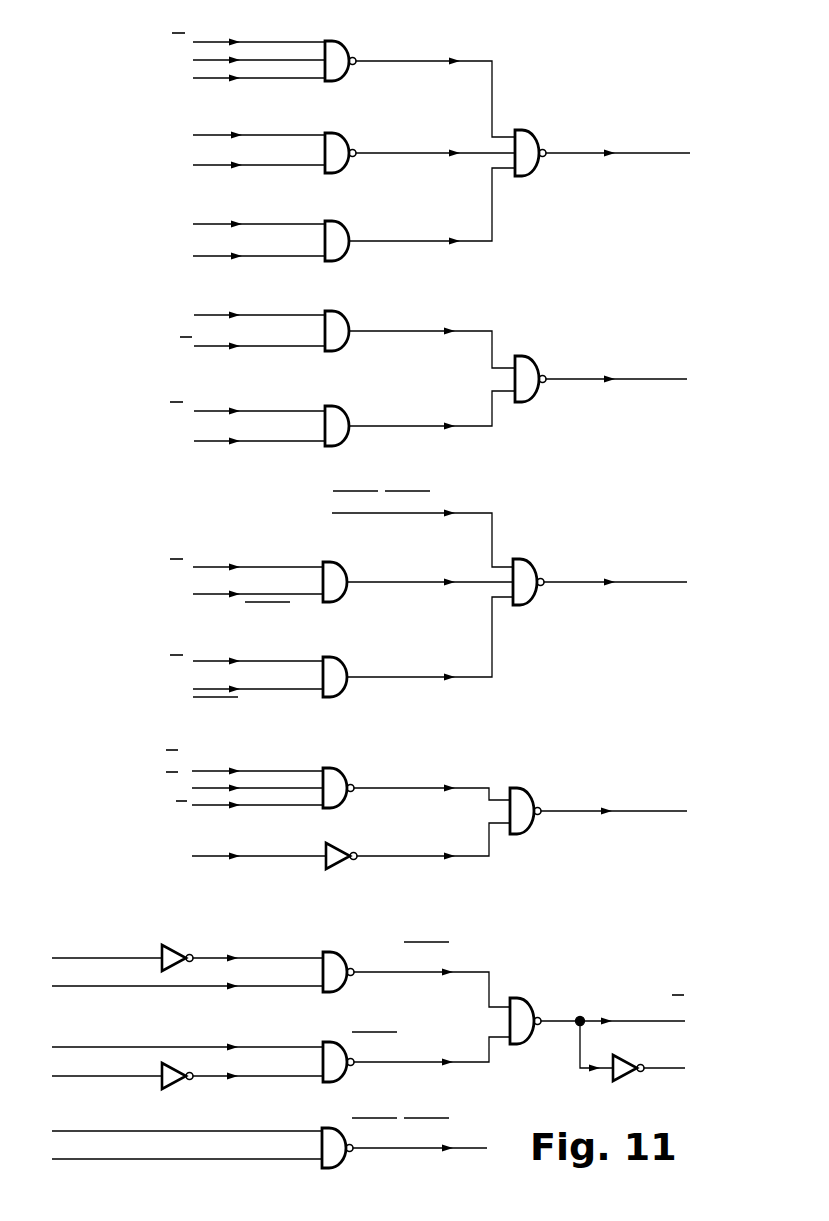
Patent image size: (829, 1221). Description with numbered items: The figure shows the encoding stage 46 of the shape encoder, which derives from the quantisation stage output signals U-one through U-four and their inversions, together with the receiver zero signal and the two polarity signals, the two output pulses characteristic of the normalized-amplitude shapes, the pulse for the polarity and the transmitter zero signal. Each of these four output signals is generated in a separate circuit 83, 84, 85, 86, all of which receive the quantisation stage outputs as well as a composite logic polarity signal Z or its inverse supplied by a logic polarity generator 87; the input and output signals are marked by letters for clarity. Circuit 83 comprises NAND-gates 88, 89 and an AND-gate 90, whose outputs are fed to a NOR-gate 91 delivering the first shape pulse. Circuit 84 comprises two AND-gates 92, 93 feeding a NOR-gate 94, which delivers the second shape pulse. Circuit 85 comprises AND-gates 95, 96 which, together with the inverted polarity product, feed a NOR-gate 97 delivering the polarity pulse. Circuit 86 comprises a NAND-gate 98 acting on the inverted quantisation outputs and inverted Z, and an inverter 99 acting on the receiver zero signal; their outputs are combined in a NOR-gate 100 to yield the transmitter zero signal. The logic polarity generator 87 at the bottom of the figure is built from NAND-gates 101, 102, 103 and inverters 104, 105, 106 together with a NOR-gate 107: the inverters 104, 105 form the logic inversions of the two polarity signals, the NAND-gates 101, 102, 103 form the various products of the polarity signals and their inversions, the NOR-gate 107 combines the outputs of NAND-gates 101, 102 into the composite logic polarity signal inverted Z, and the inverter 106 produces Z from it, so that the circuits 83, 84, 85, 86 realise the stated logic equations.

The encoding stage 46 is at (118, 491).
The circuit 83 is at (616, 97).
The circuit 84 is at (614, 317).
The circuit 85 is at (614, 539).
The circuit 86 is at (609, 761).
The logic polarity generator 87 is at (612, 963).
The NAND-gate 88 is at (341, 50).
The NAND-gate 89 is at (341, 141).
The AND-gate 90 is at (341, 228).
The NOR-gate 91 is at (533, 138).
The AND-gate 92 is at (341, 320).
The AND-gate 93 is at (341, 414).
The NOR-gate 94 is at (531, 360).
The AND-gate 95 is at (338, 570).
The AND-gate 96 is at (338, 665).
The NOR-gate 97 is at (528, 573).
The NAND-gate 98 is at (334, 776).
The inverter 99 is at (338, 848).
The NOR-gate 100 is at (526, 792).
The NAND-gate 101 is at (334, 948).
The NAND-gate 102 is at (339, 1038).
The NAND-gate 103 is at (336, 1127).
The inverter 104 is at (176, 952).
The inverter 105 is at (184, 1090).
The inverter 106 is at (622, 1081).
The NOR-gate 107 is at (526, 998).